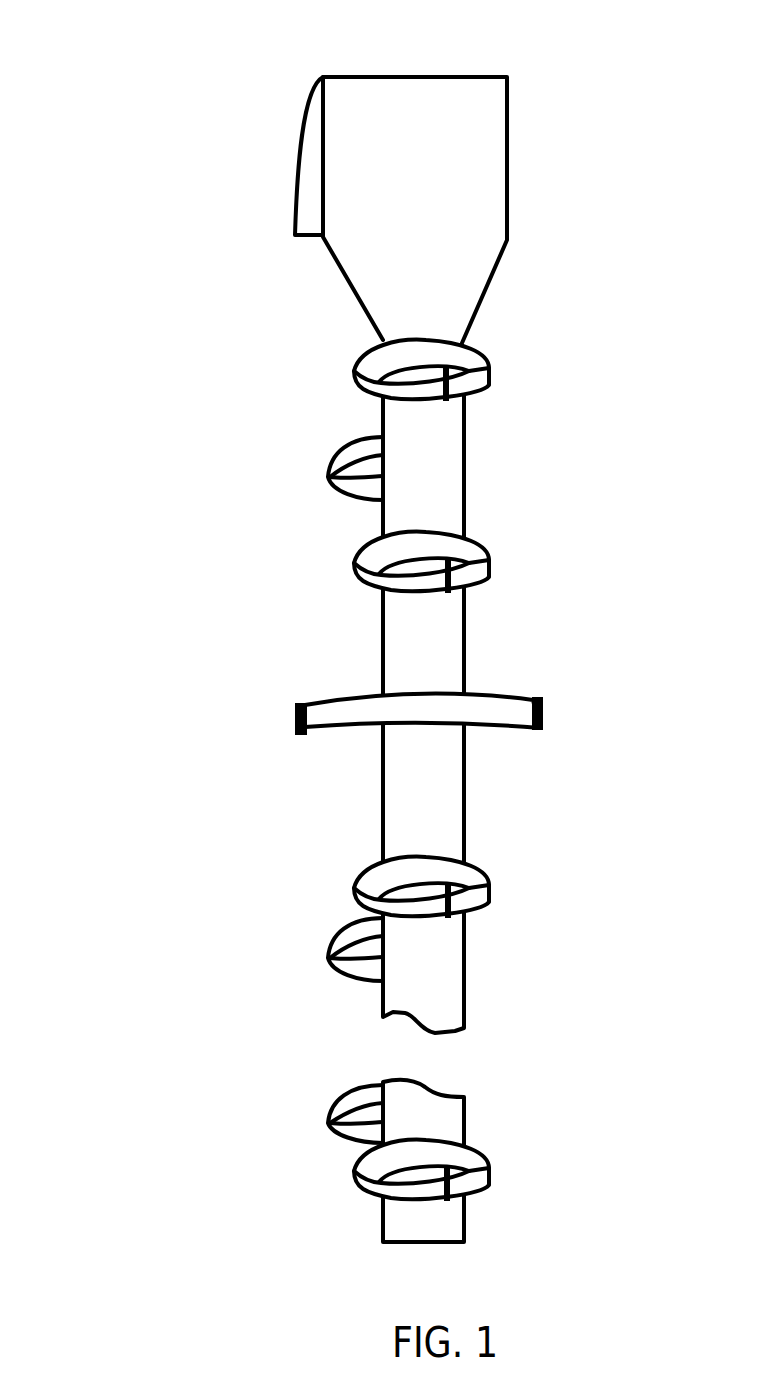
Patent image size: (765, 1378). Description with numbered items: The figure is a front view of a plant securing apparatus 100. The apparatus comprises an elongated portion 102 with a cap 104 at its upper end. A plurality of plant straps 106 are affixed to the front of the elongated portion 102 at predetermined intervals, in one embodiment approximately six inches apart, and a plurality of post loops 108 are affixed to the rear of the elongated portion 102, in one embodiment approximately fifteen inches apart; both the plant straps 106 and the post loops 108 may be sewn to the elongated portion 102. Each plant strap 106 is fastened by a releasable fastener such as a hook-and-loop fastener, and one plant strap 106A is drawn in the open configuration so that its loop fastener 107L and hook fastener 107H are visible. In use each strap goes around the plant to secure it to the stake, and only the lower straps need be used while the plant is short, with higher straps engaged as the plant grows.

The plant securing apparatus 100 is at (128, 77).
The elongated portion 102 is at (442, 478).
The cap 104 is at (468, 190).
The plant straps 106 is at (473, 565).
The plant strap 106A is at (355, 708).
The hook fastener 107H is at (543, 697).
The loop fastener 107L is at (318, 733).
The post loops 108 is at (340, 450).